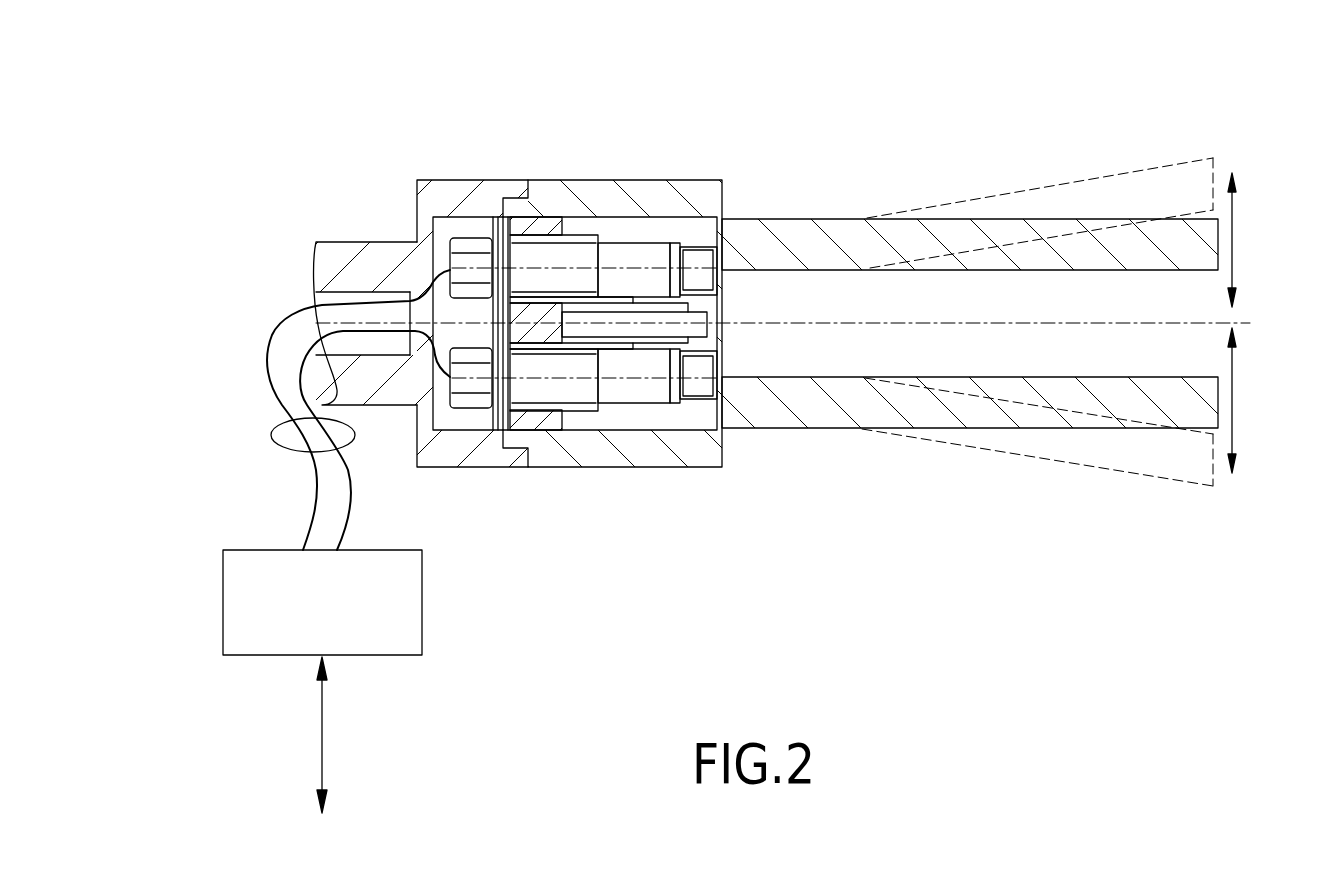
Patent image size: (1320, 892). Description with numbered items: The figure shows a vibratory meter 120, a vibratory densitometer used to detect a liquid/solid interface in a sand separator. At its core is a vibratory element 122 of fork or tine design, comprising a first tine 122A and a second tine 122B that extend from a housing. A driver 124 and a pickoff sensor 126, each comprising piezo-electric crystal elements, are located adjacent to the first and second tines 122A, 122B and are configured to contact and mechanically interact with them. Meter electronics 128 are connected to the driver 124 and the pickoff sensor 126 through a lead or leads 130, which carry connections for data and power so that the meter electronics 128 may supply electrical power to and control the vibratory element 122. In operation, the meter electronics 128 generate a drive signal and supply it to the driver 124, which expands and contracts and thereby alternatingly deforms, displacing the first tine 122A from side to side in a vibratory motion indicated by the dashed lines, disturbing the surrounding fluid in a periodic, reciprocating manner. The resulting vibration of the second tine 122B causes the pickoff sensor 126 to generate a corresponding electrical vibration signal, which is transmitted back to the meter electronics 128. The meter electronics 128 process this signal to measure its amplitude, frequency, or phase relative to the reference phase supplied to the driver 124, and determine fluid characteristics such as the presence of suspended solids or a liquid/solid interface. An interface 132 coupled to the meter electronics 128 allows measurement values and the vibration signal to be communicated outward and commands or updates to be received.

The vibratory meter 120 is at (372, 125).
The vibratory element 122 is at (883, 242).
The first tine 122A is at (813, 240).
The second tine 122B is at (810, 410).
The driver 124 is at (703, 257).
The pickoff sensor 126 is at (690, 388).
The meter electronics 128 is at (223, 583).
The leads 130 is at (273, 437).
The interface 132 is at (324, 738).